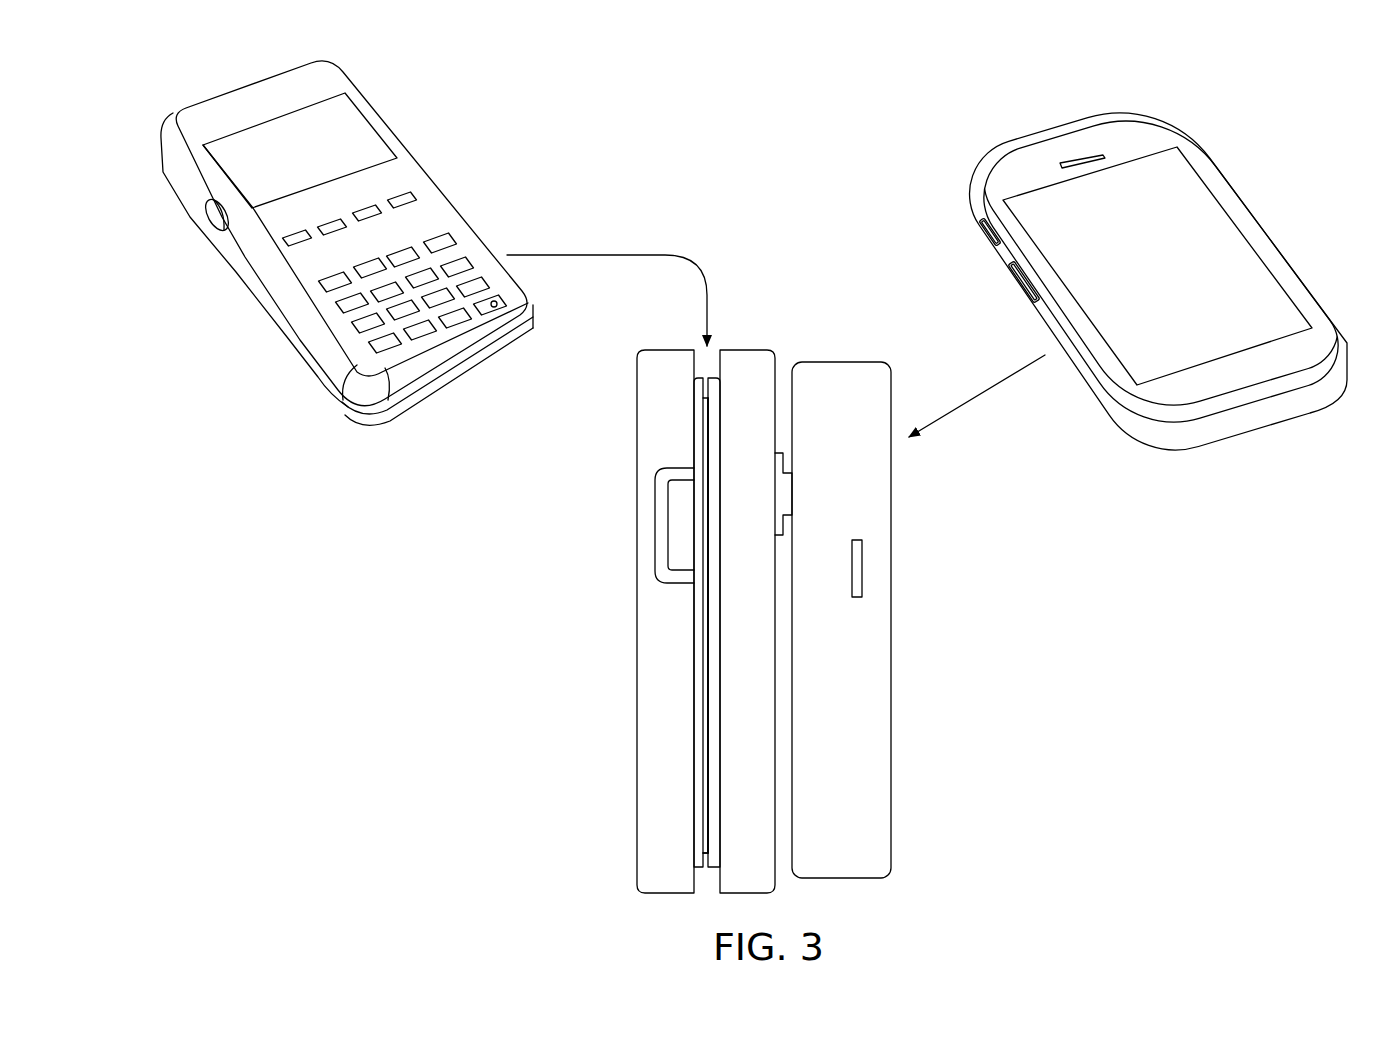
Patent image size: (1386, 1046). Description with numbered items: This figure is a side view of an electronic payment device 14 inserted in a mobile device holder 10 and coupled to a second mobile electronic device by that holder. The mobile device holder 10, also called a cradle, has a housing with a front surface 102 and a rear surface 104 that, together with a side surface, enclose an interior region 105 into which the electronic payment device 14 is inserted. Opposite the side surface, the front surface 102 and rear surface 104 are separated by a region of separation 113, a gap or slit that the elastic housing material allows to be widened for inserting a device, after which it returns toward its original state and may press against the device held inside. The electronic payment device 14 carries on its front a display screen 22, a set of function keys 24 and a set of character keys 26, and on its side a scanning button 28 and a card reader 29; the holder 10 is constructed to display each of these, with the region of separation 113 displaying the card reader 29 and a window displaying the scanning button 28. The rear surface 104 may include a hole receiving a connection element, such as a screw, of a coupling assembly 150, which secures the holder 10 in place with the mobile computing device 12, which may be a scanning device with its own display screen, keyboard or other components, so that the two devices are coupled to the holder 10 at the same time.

The mobile device holder 10 is at (679, 589).
The mobile computing device 12 is at (1276, 186).
The electronic payment device 14 is at (492, 118).
The display screen 22 is at (352, 120).
The set of function keys 24 is at (398, 147).
The set of character keys 26 is at (471, 244).
The scanning button 28 is at (208, 222).
The card reader 29 is at (262, 279).
The front surface 102 is at (637, 520).
The rear surface 104 is at (768, 358).
The interior region 105 is at (737, 308).
The region of separation 113 is at (706, 882).
The coupling assembly 150 is at (791, 494).